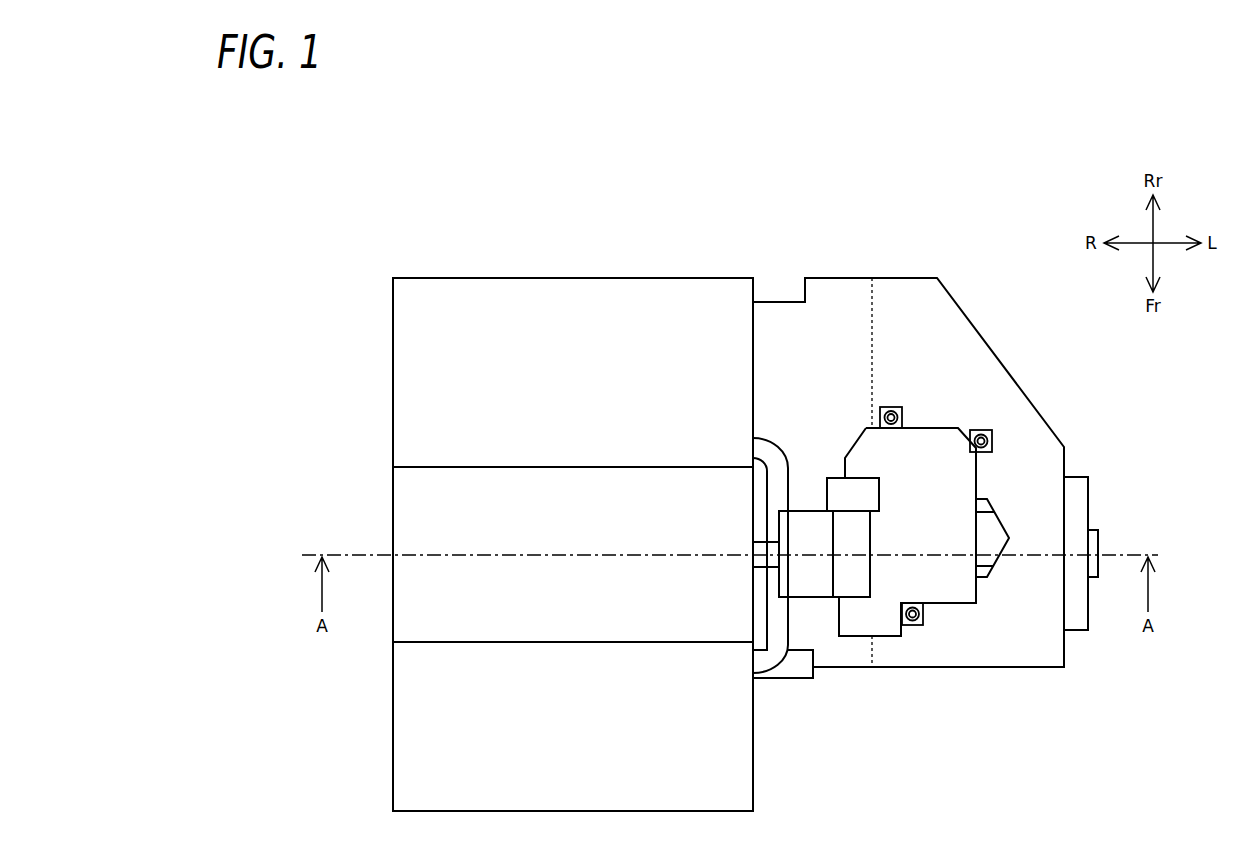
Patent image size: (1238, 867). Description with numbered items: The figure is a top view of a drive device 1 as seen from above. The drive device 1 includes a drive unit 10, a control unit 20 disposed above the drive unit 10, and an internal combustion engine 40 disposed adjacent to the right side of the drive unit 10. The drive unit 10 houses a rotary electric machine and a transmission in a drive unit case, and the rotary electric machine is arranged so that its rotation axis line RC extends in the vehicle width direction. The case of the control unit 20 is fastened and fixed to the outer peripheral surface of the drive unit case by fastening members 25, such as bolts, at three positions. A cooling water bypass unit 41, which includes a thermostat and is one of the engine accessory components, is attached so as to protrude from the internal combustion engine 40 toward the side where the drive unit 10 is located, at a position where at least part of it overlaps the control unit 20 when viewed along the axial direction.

The drive device 1 is at (389, 252).
The drive unit 10 is at (988, 346).
The control unit 20 is at (983, 478).
The fastening members 25 is at (894, 409).
The internal combustion engine 40 is at (426, 495).
The cooling water bypass unit 41 is at (809, 503).
The rotation axis line RC is at (1123, 554).